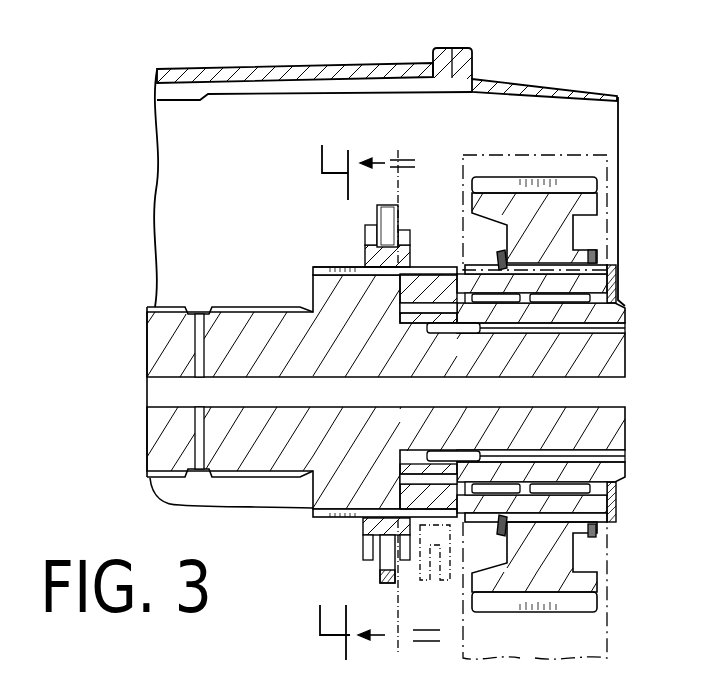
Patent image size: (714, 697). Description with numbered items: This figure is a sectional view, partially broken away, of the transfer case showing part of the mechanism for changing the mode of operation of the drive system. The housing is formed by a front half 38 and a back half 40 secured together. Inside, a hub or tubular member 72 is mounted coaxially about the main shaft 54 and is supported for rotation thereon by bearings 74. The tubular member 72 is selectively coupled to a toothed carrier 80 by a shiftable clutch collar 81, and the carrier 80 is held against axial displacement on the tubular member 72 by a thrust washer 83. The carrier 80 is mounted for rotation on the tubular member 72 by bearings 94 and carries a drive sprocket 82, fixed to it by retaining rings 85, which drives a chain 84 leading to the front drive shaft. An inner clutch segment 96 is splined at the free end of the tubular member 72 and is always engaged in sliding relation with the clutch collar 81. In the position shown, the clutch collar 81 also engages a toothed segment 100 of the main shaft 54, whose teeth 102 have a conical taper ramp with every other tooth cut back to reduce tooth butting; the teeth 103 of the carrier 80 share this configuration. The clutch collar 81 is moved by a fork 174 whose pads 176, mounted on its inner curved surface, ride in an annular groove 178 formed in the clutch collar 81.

The front half 38 is at (391, 63).
The back half 40 is at (523, 80).
The main shaft 54 is at (245, 300).
The tubular member 72 is at (595, 317).
The bearings 74 is at (458, 333).
The toothed carrier 80 is at (612, 272).
The shiftable clutch collar 81 is at (417, 242).
The drive sprocket 82 is at (588, 205).
The thrust washer 83 is at (618, 288).
The chain 84 is at (570, 155).
The retaining rings 85 is at (592, 250).
The bearings 94 is at (562, 298).
The inner clutch segment 96 is at (447, 274).
The toothed segment 100 is at (313, 287).
The teeth 102 is at (325, 267).
The teeth 103 is at (477, 263).
The fork 174 is at (380, 572).
The pads 176 is at (398, 232).
The annular groove 178 is at (373, 302).